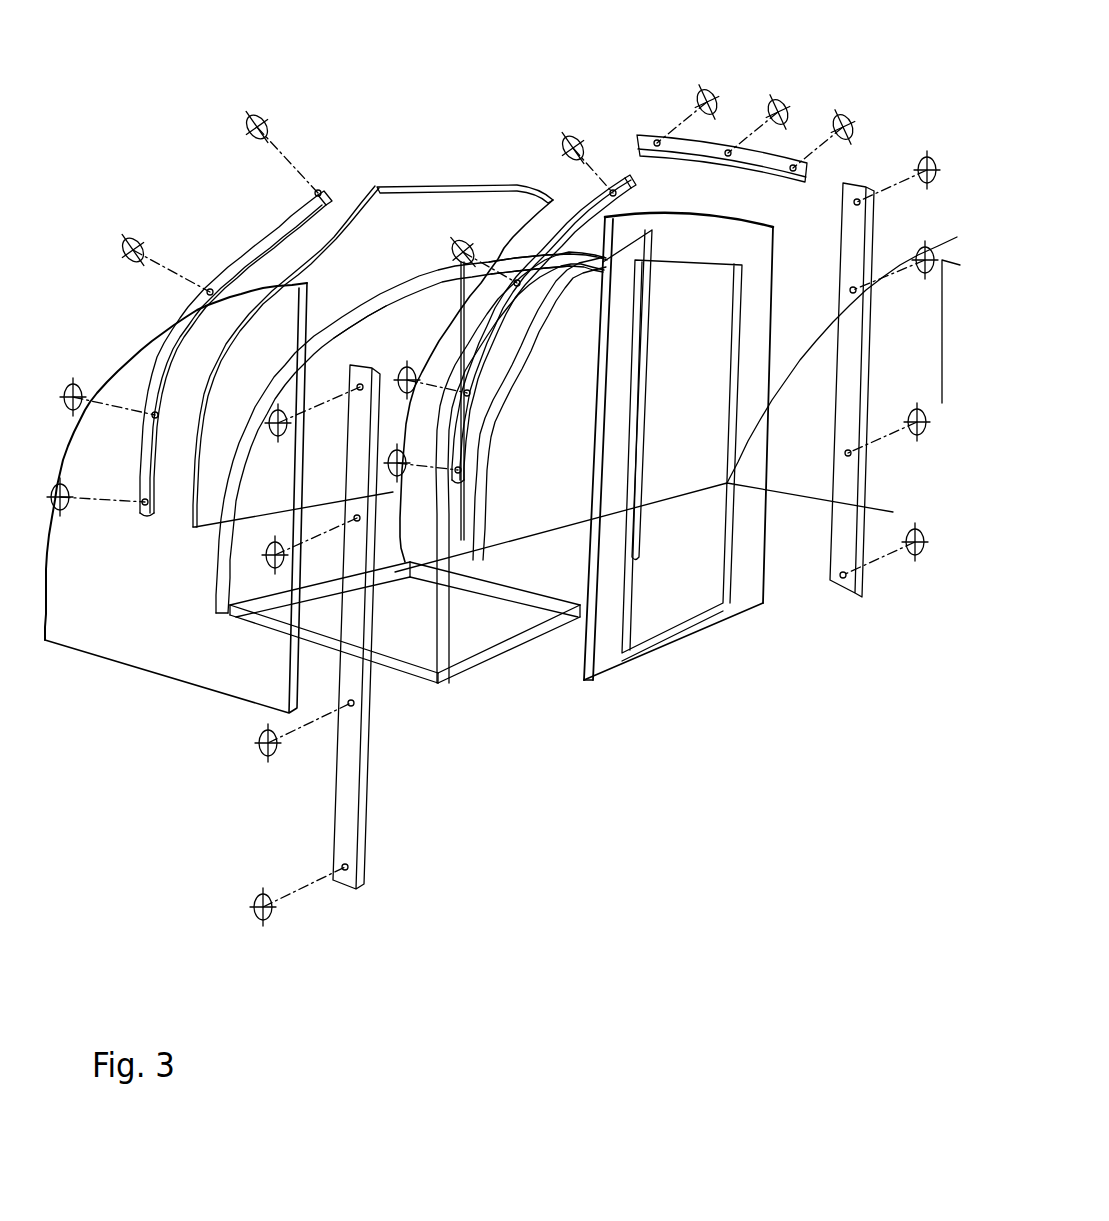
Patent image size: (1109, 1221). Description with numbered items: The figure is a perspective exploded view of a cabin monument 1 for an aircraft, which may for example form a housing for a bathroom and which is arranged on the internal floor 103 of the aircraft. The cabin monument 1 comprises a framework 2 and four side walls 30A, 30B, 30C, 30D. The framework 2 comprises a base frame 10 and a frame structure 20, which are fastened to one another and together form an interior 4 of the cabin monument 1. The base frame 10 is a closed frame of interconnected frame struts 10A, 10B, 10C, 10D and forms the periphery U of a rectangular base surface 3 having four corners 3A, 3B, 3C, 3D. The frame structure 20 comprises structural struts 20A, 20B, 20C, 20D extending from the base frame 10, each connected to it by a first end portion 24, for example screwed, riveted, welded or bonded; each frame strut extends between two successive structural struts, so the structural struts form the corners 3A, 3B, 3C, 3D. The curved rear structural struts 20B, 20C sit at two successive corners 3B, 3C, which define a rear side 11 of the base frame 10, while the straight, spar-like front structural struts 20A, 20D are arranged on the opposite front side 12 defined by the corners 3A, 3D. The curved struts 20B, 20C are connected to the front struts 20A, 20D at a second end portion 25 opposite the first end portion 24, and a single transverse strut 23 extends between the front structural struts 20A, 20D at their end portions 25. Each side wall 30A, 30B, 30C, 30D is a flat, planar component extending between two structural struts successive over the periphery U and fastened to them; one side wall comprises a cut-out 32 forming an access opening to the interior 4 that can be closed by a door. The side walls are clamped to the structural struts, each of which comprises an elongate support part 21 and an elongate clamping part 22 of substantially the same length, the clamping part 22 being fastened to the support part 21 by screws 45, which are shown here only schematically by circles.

The cabin monument 1 is at (832, 78).
The framework 2 is at (515, 670).
The base surface 3 is at (424, 657).
The corner 3A is at (462, 687).
The corner 3B is at (205, 610).
The corner 3C is at (406, 582).
The corner 3D is at (580, 637).
The interior 4 is at (371, 538).
The base frame 10 is at (360, 627).
The frame strut 10A is at (530, 637).
The frame strut 10B is at (290, 667).
The frame strut 10C is at (310, 593).
The frame strut 10D is at (527, 593).
The rear side 11 is at (247, 579).
The front side 12 is at (489, 687).
The frame structure 20 is at (454, 407).
The front structural strut 20A is at (450, 537).
The curved rear structural strut 20B is at (588, 447).
The curved rear structural strut 20C is at (530, 307).
The front structural strut 20D is at (370, 303).
The support part 21 is at (387, 298).
The clamping part 22 is at (250, 233).
The transverse strut 23 is at (507, 264).
The first end portion 24 is at (598, 576).
The second end portion 25 is at (598, 288).
The side wall 30A is at (747, 590).
The side wall 30B is at (162, 653).
The side wall 30C is at (387, 203).
The side wall 30D is at (640, 414).
The cut-out 32 is at (715, 262).
The screw 45 is at (257, 112).
The internal floor 103 is at (788, 515).
The periphery U is at (387, 677).